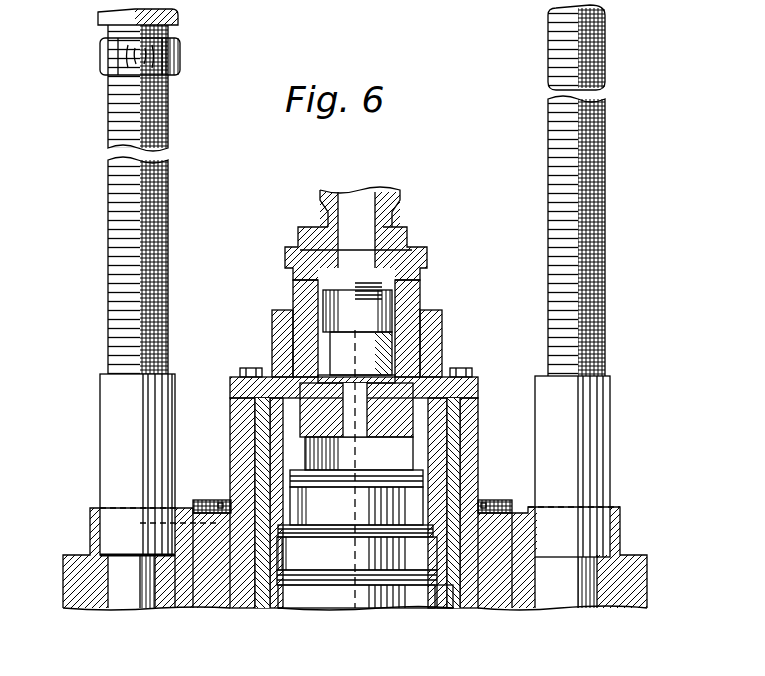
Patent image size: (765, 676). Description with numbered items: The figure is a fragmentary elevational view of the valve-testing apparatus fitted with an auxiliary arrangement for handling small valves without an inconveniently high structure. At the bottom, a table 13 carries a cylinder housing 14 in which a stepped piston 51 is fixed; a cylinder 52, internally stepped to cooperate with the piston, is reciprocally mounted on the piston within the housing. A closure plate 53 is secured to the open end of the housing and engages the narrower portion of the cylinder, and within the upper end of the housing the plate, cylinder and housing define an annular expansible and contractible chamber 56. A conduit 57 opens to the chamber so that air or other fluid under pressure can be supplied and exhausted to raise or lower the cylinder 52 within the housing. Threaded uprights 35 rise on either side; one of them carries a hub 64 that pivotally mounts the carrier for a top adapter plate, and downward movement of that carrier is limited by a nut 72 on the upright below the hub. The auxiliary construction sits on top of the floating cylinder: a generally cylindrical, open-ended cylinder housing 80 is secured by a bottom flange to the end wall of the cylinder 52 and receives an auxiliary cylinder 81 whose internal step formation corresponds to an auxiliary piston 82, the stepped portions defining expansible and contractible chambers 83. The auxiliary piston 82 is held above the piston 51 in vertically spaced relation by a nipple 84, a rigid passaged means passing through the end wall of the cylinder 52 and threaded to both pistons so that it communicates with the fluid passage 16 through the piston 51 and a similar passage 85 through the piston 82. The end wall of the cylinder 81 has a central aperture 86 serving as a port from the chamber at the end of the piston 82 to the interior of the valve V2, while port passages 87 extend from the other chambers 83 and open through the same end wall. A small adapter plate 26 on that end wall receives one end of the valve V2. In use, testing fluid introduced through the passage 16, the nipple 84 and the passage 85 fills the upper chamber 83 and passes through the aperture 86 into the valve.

The upright 35 is at (108, 312).
The hub 64 is at (98, 17).
The nut 72 is at (100, 60).
The table 13 is at (177, 605).
The cylinder housing 14 is at (497, 605).
The conduit 57 is at (143, 515).
The closure plate 53 is at (205, 500).
The chamber 56 is at (490, 500).
The cylinder 52 is at (478, 448).
The valve V2 is at (318, 200).
The adapter plate 26 is at (410, 250).
The port passage 87 is at (313, 291).
The auxiliary cylinder 81 is at (407, 301).
The chamber 83 is at (313, 360).
The auxiliary piston 82 is at (395, 331).
The central aperture 86 is at (362, 287).
The cylinder housing 80 is at (380, 341).
The passage 85 is at (405, 357).
The nipple 84 is at (359, 453).
The fluid passage 16 is at (341, 557).
The stepped piston 51 is at (305, 598).